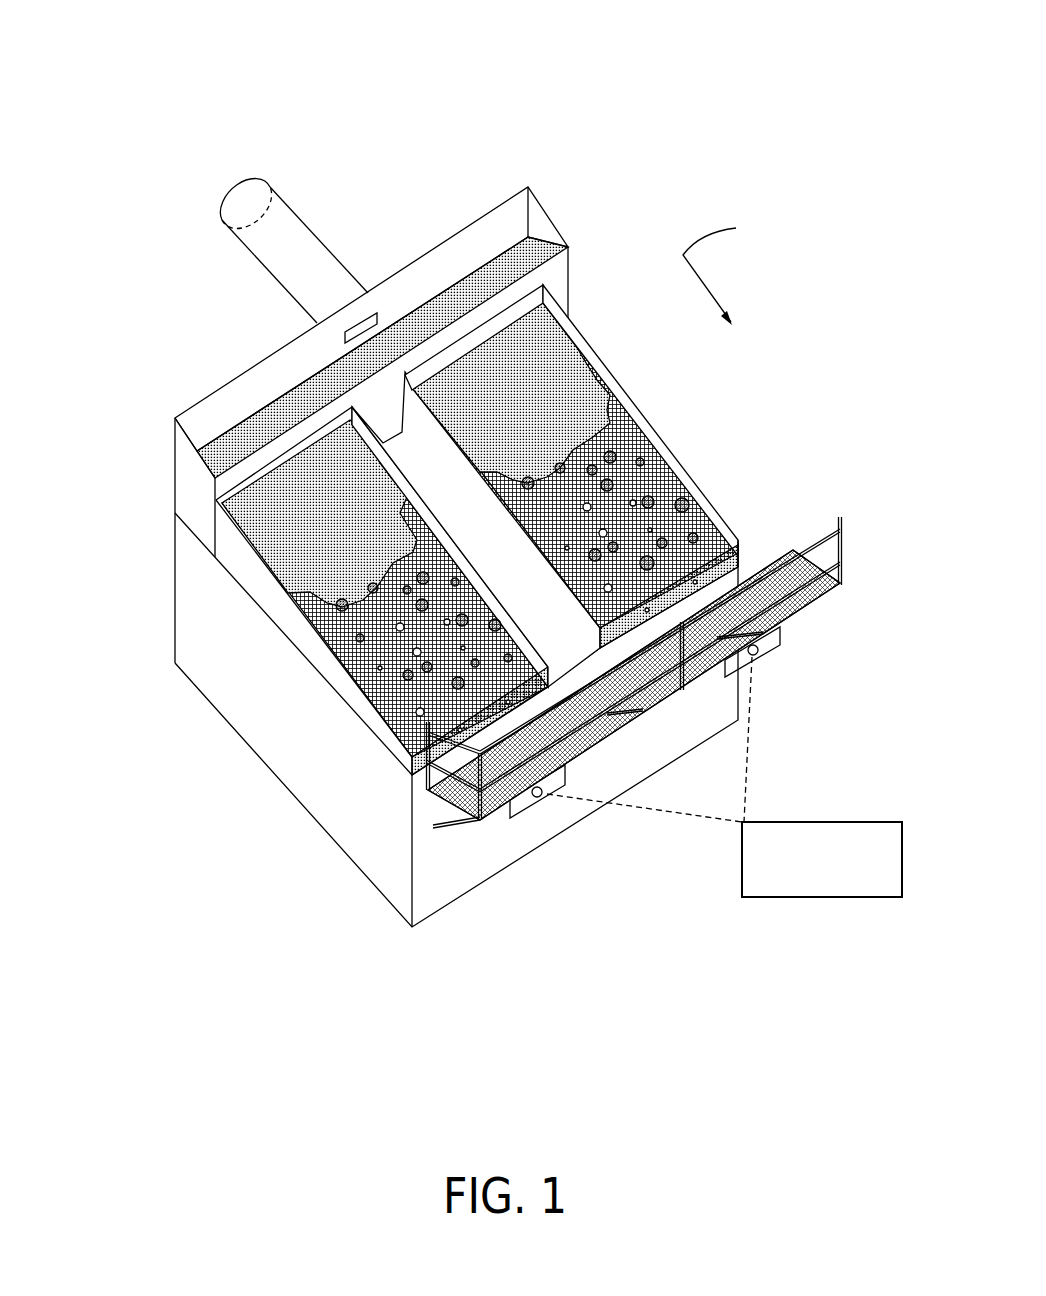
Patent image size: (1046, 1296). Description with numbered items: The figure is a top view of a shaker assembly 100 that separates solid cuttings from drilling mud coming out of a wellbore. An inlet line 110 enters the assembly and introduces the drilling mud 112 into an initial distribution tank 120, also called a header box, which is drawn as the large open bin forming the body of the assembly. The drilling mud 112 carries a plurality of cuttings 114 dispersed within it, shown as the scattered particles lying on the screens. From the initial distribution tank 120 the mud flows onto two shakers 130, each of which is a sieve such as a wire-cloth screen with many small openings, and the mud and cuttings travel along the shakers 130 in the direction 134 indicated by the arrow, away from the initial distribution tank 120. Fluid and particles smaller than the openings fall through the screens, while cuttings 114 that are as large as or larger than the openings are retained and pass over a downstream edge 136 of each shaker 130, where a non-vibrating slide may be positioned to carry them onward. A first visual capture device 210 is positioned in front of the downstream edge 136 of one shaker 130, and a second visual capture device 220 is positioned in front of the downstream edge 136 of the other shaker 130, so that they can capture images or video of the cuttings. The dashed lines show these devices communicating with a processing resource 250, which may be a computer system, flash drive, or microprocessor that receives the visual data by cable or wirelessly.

The shaker assembly 100 is at (405, 100).
The inlet line 110 is at (275, 235).
The drilling mud 112 is at (253, 437).
The cuttings 114 is at (403, 680).
The initial distribution tank 120 is at (195, 490).
The shakers 130 is at (287, 624).
The direction 134 is at (733, 269).
The downstream edge 136 is at (740, 547).
The first visual capture device 210 is at (526, 808).
The second visual capture device 220 is at (760, 650).
The processing resource 250 is at (902, 838).